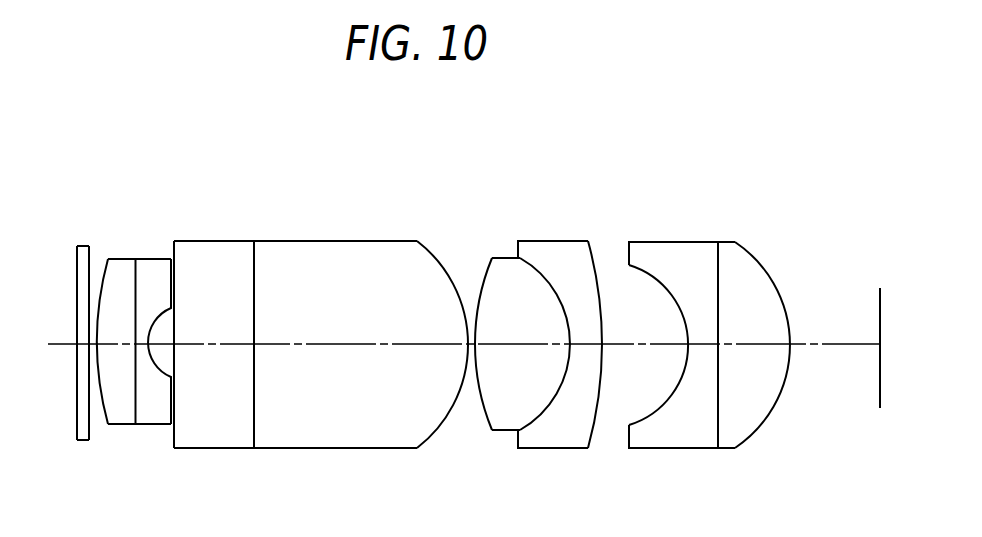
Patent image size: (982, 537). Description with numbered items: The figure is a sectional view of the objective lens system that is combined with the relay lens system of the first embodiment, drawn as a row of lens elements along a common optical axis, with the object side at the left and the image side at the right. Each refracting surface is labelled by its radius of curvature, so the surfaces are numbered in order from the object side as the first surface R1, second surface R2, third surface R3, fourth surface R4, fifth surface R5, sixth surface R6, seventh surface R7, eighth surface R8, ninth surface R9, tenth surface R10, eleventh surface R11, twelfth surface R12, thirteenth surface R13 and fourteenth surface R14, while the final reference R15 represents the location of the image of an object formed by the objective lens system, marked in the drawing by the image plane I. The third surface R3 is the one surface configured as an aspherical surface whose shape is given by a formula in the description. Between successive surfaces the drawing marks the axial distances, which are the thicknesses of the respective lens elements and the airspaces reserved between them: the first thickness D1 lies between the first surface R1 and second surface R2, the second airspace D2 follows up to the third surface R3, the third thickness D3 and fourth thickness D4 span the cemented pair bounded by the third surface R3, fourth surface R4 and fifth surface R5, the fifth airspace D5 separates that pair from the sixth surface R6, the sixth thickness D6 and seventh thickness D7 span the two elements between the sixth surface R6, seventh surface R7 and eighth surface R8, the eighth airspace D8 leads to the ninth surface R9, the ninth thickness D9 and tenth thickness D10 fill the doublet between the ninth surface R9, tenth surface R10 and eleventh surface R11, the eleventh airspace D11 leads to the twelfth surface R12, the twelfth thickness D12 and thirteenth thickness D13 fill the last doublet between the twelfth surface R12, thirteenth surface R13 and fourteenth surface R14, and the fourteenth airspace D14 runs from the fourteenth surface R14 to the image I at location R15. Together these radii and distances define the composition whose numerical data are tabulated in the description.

The first surface R1 is at (77, 277).
The second surface R2 is at (89, 266).
The third surface R3 is at (104, 262).
The fourth surface R4 is at (136, 270).
The fifth surface R5 is at (163, 309).
The sixth surface R6 is at (174, 297).
The seventh surface R7 is at (254, 262).
The eighth surface R8 is at (438, 262).
The ninth surface R9 is at (483, 273).
The tenth surface R10 is at (532, 258).
The eleventh surface R11 is at (594, 266).
The twelfth surface R12 is at (651, 273).
The thirteenth surface R13 is at (718, 262).
The fourteenth surface R14 is at (757, 262).
The image location R15 is at (880, 307).
The first thickness D1 is at (88, 344).
The second airspace D2 is at (92, 447).
The third thickness D3 is at (117, 427).
The fourth thickness D4 is at (143, 427).
The fifth airspace D5 is at (160, 427).
The sixth thickness D6 is at (213, 345).
The seventh thickness D7 is at (308, 345).
The eighth airspace D8 is at (467, 350).
The ninth thickness D9 is at (510, 345).
The tenth thickness D10 is at (580, 345).
The eleventh airspace D11 is at (623, 345).
The twelfth thickness D12 is at (698, 345).
The thirteenth thickness D13 is at (753, 345).
The fourteenth airspace D14 is at (823, 347).
The image I is at (882, 383).